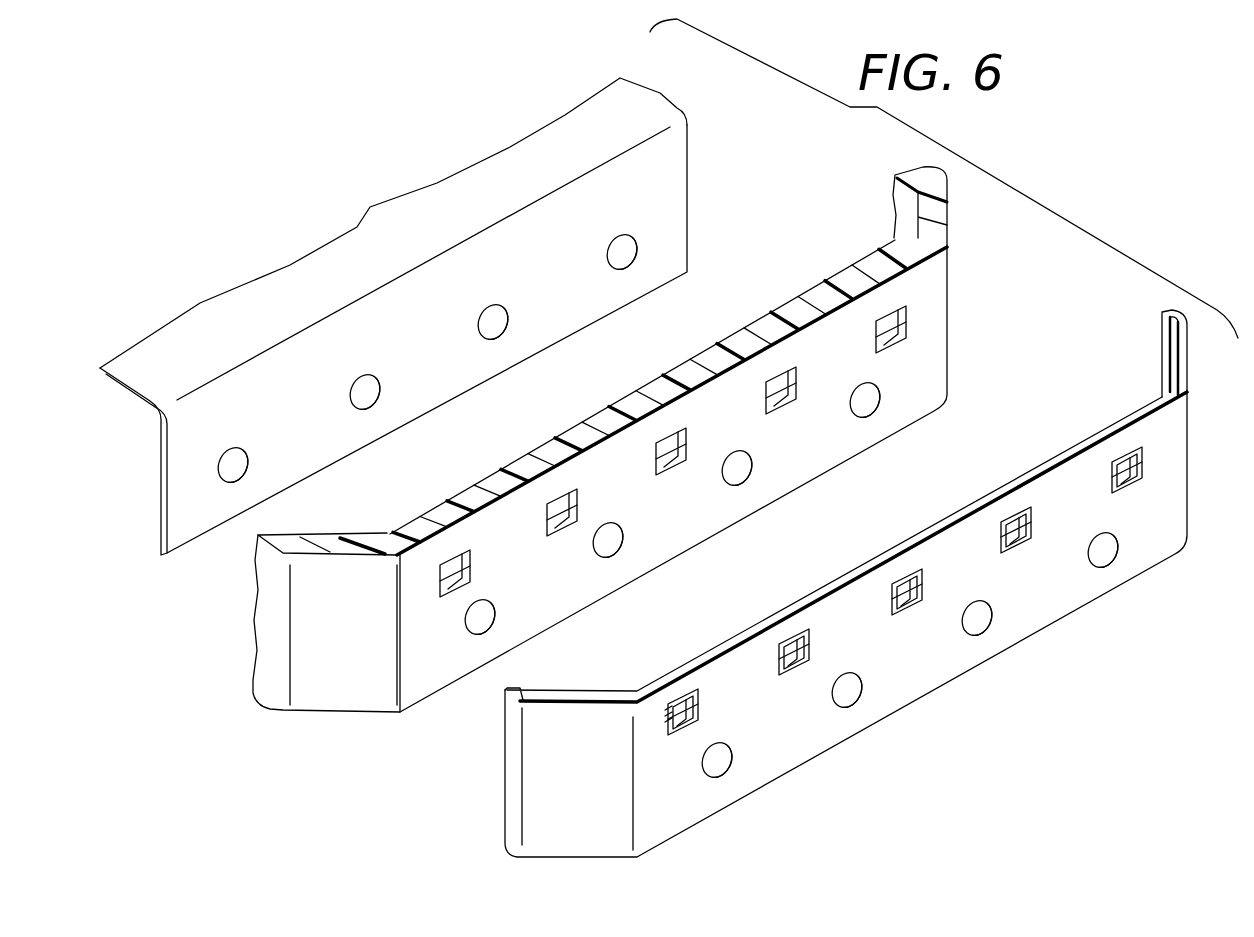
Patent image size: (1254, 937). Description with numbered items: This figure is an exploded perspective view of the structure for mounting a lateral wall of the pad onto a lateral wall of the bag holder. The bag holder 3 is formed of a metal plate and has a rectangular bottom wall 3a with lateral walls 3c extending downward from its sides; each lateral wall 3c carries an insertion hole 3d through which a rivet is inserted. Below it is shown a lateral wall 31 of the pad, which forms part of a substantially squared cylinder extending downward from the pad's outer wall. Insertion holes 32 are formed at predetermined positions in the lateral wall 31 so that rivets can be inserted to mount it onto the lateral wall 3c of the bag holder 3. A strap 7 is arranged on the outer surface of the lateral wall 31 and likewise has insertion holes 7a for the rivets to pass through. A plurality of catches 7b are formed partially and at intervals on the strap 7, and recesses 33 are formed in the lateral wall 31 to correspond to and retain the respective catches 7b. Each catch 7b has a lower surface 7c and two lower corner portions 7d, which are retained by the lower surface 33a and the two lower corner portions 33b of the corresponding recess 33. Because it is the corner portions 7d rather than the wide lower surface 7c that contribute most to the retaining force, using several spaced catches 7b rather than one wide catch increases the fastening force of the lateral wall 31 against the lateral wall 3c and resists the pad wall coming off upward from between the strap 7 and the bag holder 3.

The bag holder 3 is at (402, 312).
The bottom wall 3a is at (635, 104).
The lateral wall 3c is at (673, 160).
The insertion hole 3d is at (250, 470).
The lateral wall 31 is at (933, 268).
The insertion hole 32 is at (493, 622).
The recess 33 is at (707, 461).
The lower surface 33a is at (447, 592).
The lower corner portion 33b is at (470, 556).
The strap 7 is at (790, 753).
The insertion hole 7a is at (730, 770).
The catch 7b is at (880, 615).
The lower surface 7c is at (688, 730).
The lower corner portion 7d is at (672, 722).